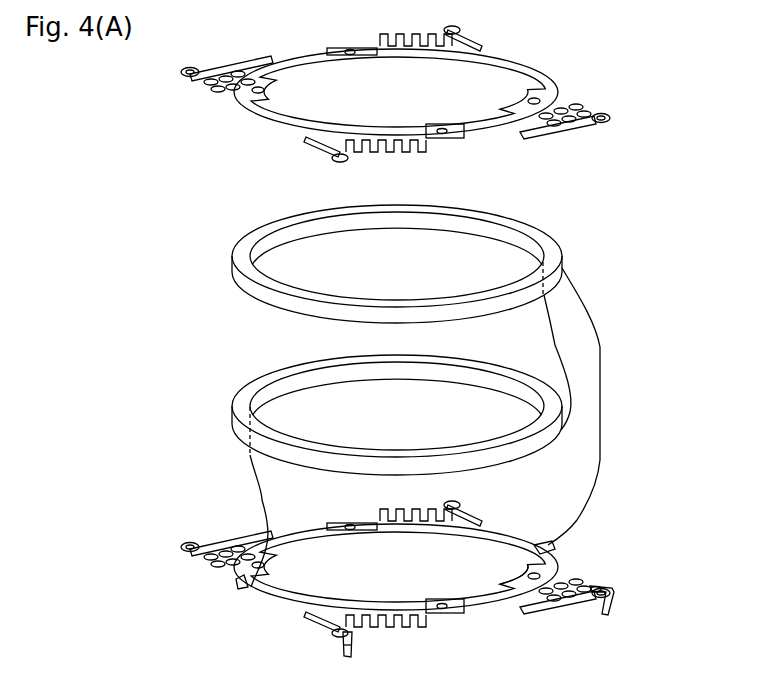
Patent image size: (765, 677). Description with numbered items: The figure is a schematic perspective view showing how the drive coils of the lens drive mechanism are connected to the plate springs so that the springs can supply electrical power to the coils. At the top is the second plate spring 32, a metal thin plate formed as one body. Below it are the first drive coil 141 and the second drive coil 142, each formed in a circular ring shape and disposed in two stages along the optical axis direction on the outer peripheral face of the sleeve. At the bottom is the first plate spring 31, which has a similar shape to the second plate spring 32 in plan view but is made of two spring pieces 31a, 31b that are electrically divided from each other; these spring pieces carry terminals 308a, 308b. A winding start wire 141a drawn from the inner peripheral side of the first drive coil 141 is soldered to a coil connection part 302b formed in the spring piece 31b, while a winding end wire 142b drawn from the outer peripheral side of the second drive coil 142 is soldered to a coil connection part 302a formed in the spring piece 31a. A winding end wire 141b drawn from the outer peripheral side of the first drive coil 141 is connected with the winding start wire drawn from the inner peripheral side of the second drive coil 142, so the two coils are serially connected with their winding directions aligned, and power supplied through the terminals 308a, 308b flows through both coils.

The second plate spring 32 is at (592, 94).
The second drive coil 142 is at (232, 268).
The first drive coil 141 is at (232, 413).
The winding start wire 141a is at (250, 467).
The winding end wire 141b is at (572, 373).
The winding end wire 142b is at (604, 466).
The first plate spring 31 is at (238, 607).
The spring piece 31a is at (500, 601).
The spring piece 31b is at (455, 613).
The coil connection part 302a is at (556, 545).
The coil connection part 302b is at (238, 580).
The terminal 308a is at (615, 604).
The terminal 308b is at (358, 644).